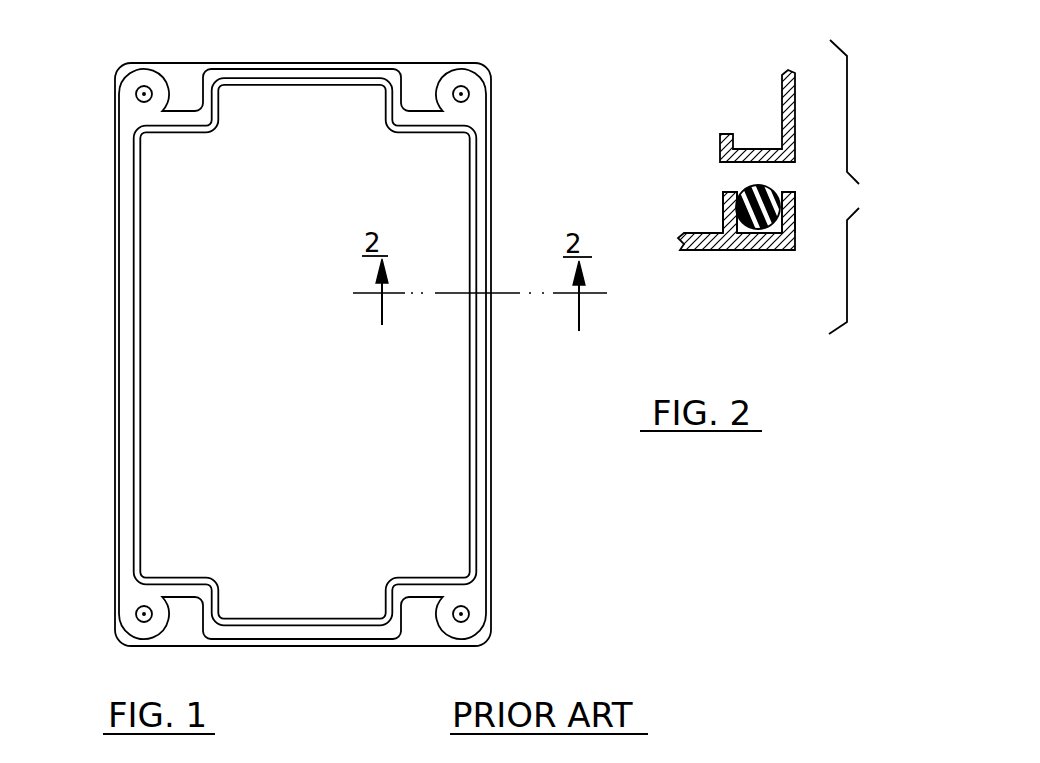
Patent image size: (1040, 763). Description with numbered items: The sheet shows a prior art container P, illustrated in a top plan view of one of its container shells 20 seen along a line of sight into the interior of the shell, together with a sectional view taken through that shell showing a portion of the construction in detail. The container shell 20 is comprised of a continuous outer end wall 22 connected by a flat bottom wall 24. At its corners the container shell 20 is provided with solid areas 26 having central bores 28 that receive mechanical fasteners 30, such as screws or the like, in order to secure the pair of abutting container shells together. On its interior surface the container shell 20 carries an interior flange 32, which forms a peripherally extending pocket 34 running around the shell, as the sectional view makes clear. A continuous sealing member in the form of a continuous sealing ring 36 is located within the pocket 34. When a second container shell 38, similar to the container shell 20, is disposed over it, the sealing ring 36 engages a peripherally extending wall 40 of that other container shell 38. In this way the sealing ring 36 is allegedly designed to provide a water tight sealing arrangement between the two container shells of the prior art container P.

In FIG. 1, the container shell 20 is at (470, 60).
In FIG. 1, the outer end wall 22 is at (492, 170).
In FIG. 2, the outer end wall 22 is at (797, 193).
In FIG. 1, the flat bottom wall 24 is at (318, 194).
In FIG. 1, the solid areas 26 is at (172, 88).
In FIG. 1, the central bores 28 is at (143, 82).
In FIG. 1, the mechanical fasteners 30 is at (136, 88).
In FIG. 1, the interior flange 32 is at (471, 357).
In FIG. 2, the interior flange 32 is at (724, 204).
In FIG. 2, the peripherally extending pocket 34 is at (745, 234).
In FIG. 1, the sealing ring 36 is at (488, 483).
In FIG. 2, the sealing ring 36 is at (772, 205).
In FIG. 2, the second container shell 38 is at (782, 148).
In FIG. 2, the peripherally extending wall 40 is at (761, 78).
In FIG. 1, the prior art container P is at (108, 135).